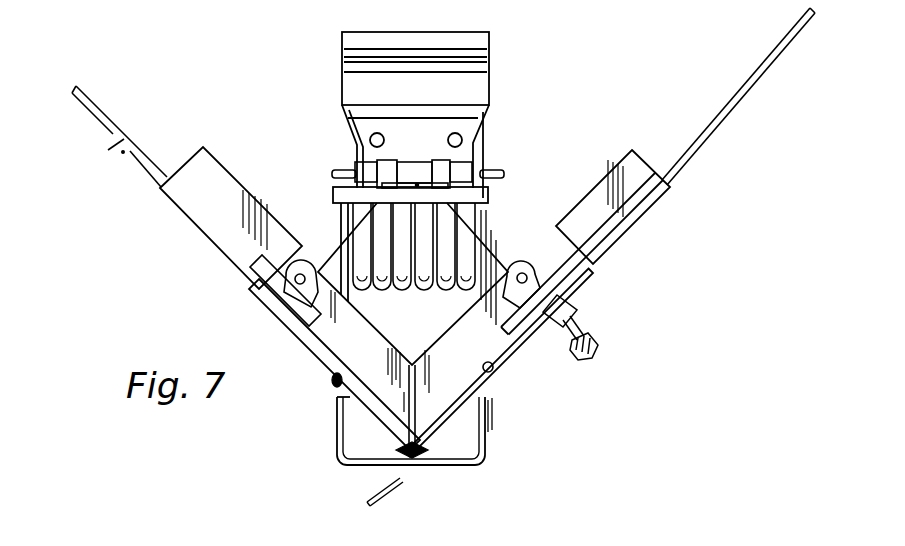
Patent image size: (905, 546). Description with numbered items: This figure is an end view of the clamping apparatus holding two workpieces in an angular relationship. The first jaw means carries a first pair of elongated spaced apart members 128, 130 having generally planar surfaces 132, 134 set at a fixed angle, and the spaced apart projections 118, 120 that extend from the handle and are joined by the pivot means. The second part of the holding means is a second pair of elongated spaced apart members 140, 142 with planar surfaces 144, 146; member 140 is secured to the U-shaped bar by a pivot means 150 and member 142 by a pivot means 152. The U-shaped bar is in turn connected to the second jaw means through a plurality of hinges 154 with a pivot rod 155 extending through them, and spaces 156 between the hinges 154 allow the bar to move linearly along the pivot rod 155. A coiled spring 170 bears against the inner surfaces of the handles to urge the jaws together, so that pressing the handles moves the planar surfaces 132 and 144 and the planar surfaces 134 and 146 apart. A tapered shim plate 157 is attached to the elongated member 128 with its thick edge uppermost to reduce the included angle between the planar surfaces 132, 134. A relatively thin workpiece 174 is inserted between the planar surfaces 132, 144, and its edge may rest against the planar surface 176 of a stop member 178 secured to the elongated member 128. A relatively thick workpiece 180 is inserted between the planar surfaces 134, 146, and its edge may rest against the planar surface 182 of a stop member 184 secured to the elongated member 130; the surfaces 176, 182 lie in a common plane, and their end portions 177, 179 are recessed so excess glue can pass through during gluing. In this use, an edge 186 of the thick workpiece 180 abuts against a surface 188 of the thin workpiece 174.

The projection 118 is at (487, 447).
The projection 120 is at (337, 453).
The elongated spaced apart member 128 is at (520, 355).
The elongated spaced apart member 130 is at (330, 374).
The planar surface 132 is at (493, 370).
The planar surface 134 is at (334, 395).
The elongated spaced apart member 140 is at (562, 268).
The elongated spaced apart member 142 is at (262, 252).
The planar surface 144 is at (585, 271).
The planar surface 146 is at (257, 275).
The pivot means 150 is at (521, 272).
The pivot means 152 is at (300, 268).
The hinge 154 is at (447, 182).
The pivot rod 155 is at (480, 178).
The space 156 is at (385, 185).
The tapered shim plate 157 is at (583, 290).
The coiled spring 170 is at (406, 290).
The relatively thin workpiece 174 is at (722, 117).
The planar surface 176 is at (641, 180).
The end portion 177 is at (440, 400).
The stop member 178 is at (632, 150).
The end portion 179 is at (398, 420).
The relatively thick workpiece 180 is at (119, 136).
The planar surface 182 is at (215, 193).
The stop member 184 is at (203, 147).
The edge 186 is at (410, 462).
The surface 188 is at (368, 501).